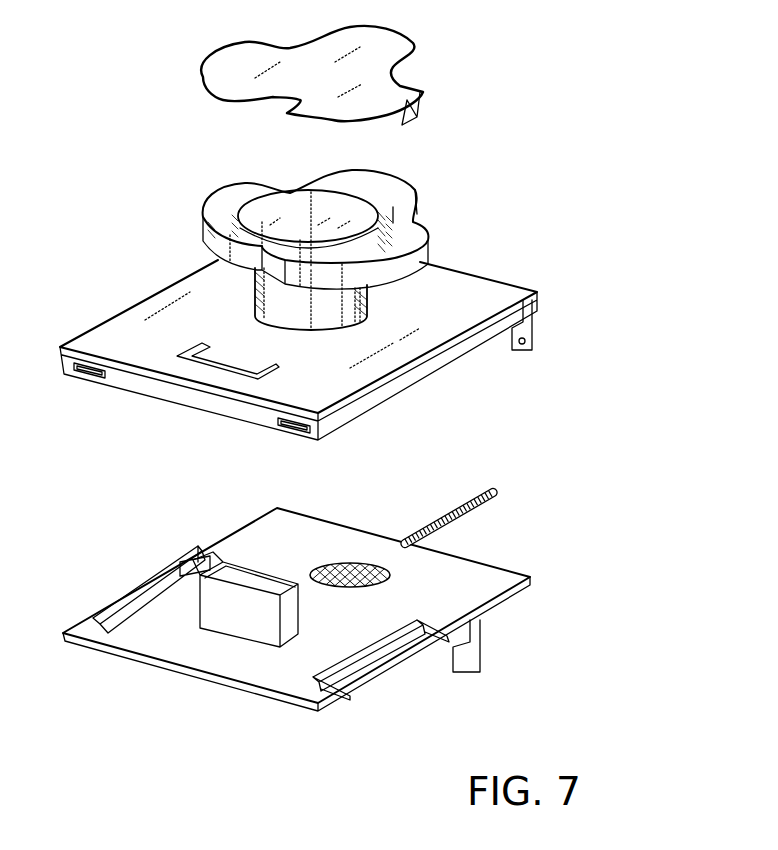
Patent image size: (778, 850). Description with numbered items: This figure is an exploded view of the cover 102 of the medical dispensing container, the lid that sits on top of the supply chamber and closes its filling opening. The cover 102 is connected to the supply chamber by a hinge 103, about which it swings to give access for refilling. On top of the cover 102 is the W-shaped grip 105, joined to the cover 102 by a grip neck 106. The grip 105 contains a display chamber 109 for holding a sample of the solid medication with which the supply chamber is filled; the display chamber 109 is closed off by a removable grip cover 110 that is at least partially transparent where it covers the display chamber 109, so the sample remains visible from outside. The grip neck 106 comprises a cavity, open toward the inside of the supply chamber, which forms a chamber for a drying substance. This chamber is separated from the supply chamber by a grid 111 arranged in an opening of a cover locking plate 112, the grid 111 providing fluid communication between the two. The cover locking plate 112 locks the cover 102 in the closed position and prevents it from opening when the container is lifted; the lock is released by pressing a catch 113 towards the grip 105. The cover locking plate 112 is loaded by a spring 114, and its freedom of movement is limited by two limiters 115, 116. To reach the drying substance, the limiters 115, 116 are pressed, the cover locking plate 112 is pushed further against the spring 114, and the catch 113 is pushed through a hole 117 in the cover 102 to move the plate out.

The cover 102 is at (513, 293).
The hinge 103 is at (532, 340).
The grip 105 is at (407, 257).
The grip neck 106 is at (270, 287).
The display chamber 109 is at (363, 217).
The grip cover 110 is at (397, 52).
The grid 111 is at (397, 577).
The cover locking plate 112 is at (498, 585).
The catch 113 is at (247, 625).
The spring 114 is at (435, 521).
The limiter 115 is at (467, 660).
The limiter 116 is at (145, 583).
The hole 117 is at (195, 372).